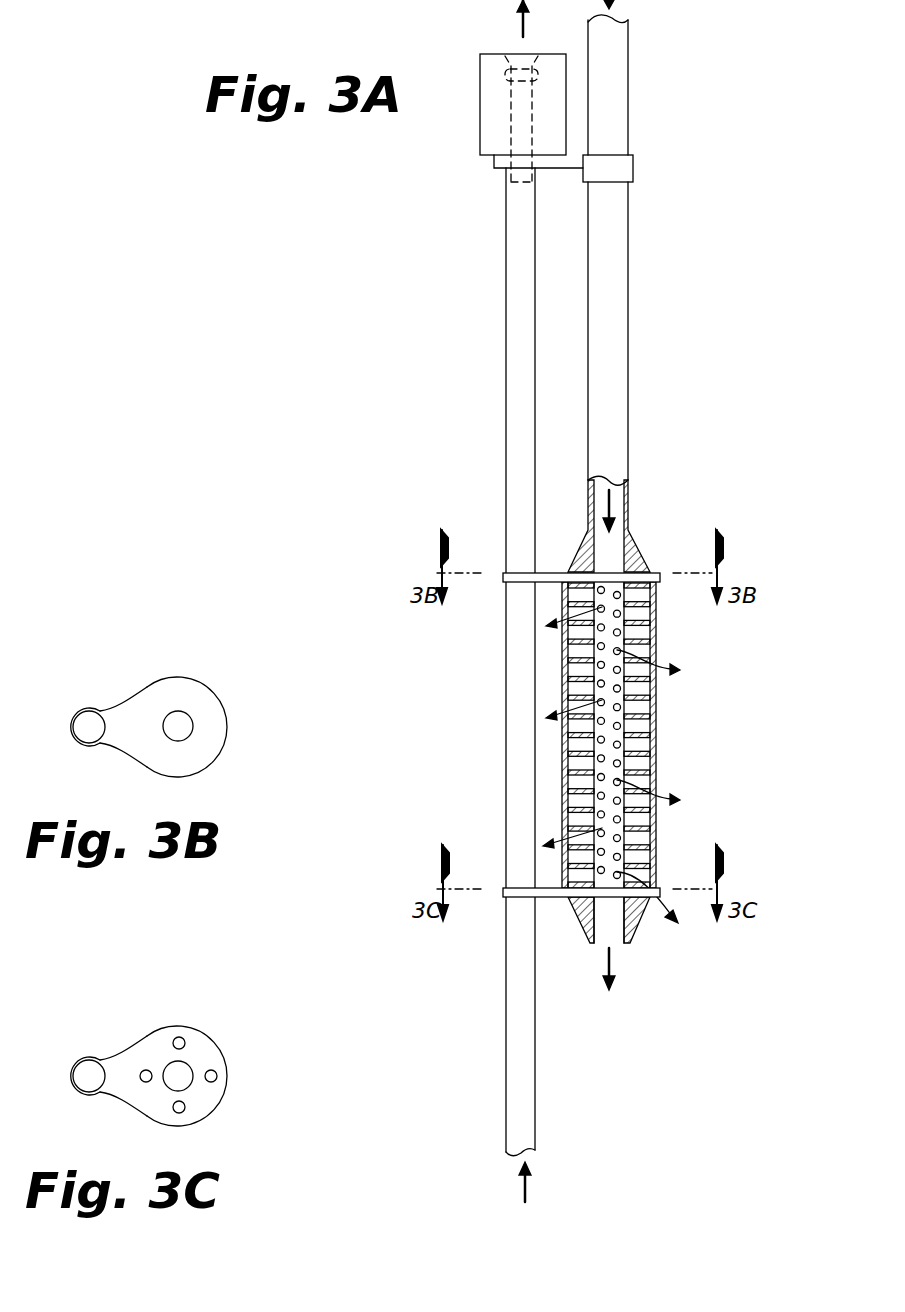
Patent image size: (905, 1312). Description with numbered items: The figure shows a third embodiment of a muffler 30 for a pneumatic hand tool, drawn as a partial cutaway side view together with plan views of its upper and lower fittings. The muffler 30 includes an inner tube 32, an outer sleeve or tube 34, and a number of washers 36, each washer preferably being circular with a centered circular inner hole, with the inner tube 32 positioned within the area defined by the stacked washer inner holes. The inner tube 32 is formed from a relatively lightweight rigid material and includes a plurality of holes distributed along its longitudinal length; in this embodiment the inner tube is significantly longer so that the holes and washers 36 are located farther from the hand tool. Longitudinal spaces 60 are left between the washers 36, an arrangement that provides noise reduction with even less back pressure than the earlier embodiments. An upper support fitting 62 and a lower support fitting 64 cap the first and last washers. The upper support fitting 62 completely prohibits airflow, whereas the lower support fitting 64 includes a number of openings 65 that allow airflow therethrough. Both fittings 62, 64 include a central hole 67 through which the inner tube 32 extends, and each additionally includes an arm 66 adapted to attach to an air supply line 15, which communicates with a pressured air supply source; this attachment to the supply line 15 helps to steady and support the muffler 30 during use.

In FIG. 3A, the air supply line 15 is at (507, 302).
In FIG. 3A, the muffler 30 is at (601, 735).
In FIG. 3A, the inner tube 32 is at (593, 733).
In FIG. 3A, the outer sleeve or tube 34 is at (590, 686).
In FIG. 3A, the washers 36 is at (648, 750).
In FIG. 3A, the longitudinal spaces 60 is at (650, 618).
In FIG. 3A, the upper support fitting 62 is at (503, 580).
In FIG. 3B, the upper support fitting 62 is at (164, 731).
In FIG. 3A, the lower support fitting 64 is at (503, 893).
In FIG. 3C, the lower support fitting 64 is at (169, 1081).
In FIG. 3C, the openings 65 is at (185, 1043).
In FIG. 3B, the arm 66 is at (105, 710).
In FIG. 3C, the arm 66 is at (88, 1095).
In FIG. 3B, the central hole 67 is at (183, 722).
In FIG. 3C, the central hole 67 is at (215, 1076).